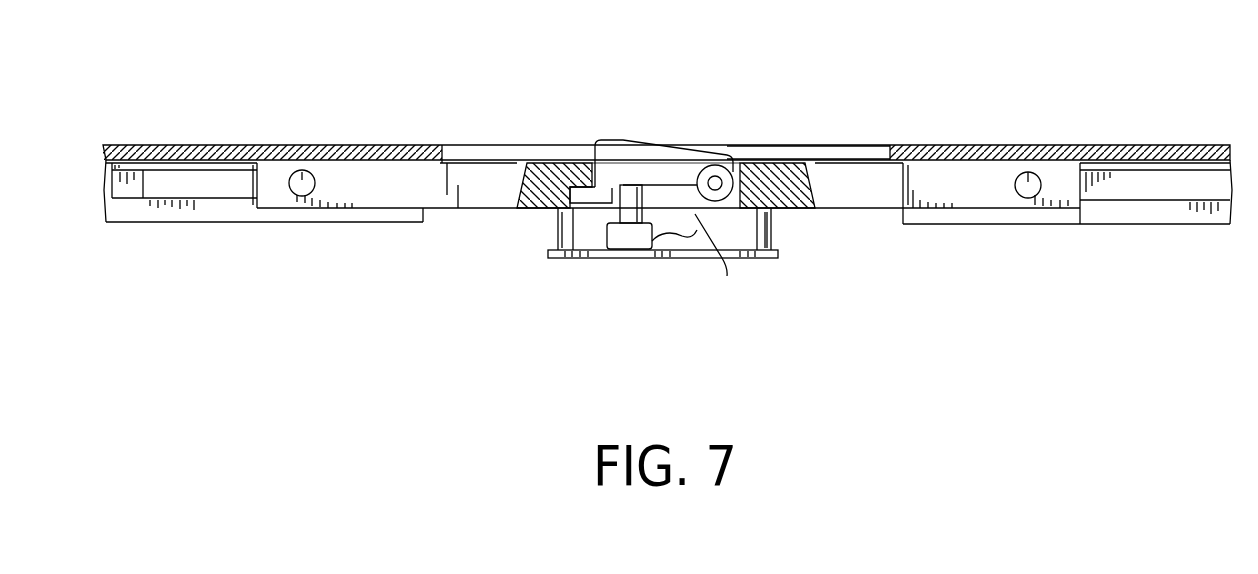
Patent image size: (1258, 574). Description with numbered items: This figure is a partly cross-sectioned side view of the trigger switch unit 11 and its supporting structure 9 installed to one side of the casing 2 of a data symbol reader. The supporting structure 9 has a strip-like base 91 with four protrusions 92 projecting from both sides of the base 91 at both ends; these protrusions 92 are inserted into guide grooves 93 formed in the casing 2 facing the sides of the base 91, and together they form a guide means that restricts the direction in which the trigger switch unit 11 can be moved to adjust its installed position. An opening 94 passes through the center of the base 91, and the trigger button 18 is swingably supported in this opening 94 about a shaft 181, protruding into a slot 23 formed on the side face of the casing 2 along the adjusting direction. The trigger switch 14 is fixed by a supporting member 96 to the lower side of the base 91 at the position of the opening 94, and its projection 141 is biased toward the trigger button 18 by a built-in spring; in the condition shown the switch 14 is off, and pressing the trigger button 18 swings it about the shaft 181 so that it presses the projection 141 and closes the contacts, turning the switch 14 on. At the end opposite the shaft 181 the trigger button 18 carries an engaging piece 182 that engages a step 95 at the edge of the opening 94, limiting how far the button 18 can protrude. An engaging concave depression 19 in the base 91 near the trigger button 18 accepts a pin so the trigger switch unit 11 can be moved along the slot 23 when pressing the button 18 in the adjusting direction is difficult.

The casing 2 is at (227, 147).
The supporting structure 9 is at (876, 258).
The trigger switch unit 11 is at (660, 278).
The trigger switch 14 is at (632, 242).
The trigger button 18 is at (621, 181).
The engaging concave depression 19 is at (775, 165).
The slot 23 is at (827, 152).
The base 91 is at (973, 175).
The protrusions 92 is at (301, 197).
The guide grooves 93 is at (206, 193).
The opening 94 is at (695, 258).
The step 95 is at (553, 163).
The supporting member 96 is at (753, 259).
The projection 141 is at (630, 182).
The shaft 181 is at (715, 182).
The engaging piece 182 is at (587, 203).